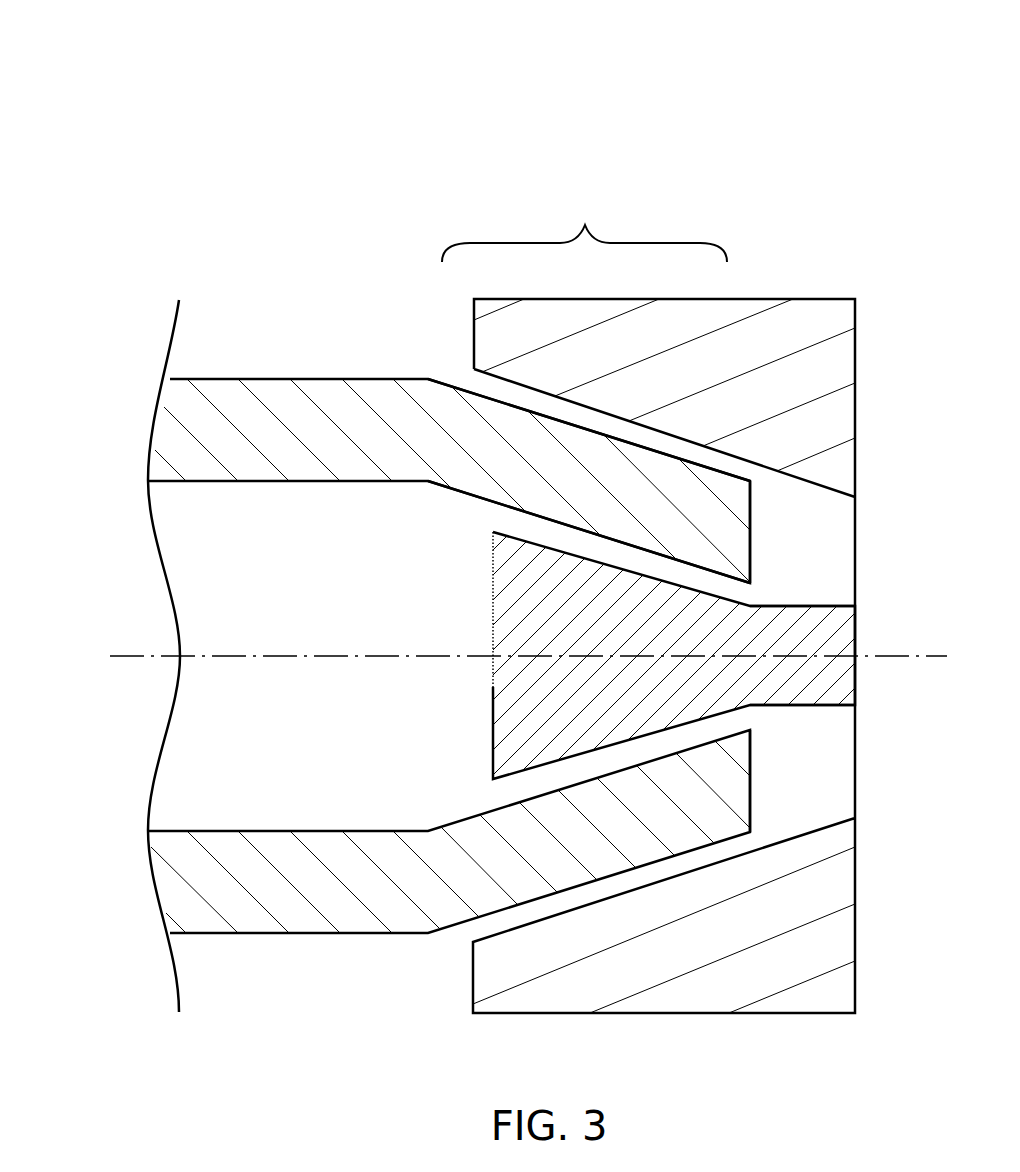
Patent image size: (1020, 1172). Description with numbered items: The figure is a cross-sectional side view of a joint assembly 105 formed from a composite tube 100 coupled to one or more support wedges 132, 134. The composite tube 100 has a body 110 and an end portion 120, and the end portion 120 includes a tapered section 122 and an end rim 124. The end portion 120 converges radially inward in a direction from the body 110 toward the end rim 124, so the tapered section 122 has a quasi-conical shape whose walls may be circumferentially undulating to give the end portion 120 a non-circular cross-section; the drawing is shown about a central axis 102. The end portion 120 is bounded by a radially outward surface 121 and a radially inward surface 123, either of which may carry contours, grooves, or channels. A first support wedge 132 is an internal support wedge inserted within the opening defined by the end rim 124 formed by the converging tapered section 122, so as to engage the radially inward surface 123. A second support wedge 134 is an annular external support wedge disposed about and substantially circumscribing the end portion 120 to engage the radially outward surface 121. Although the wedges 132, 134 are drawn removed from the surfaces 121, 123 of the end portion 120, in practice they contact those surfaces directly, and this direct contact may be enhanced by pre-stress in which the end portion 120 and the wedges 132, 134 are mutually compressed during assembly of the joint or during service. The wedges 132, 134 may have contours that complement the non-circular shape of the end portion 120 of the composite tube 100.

The composite tube 100 is at (116, 339).
The central axis 102 is at (128, 657).
The joint assembly 105 is at (238, 114).
The body 110 is at (274, 394).
The end portion 120 is at (657, 514).
The radially outward surface 121 is at (513, 404).
The tapered section 122 is at (521, 468).
The radially inward surface 123 is at (613, 541).
The end rim 124 is at (751, 534).
The first support wedge 132 is at (830, 633).
The second support wedge 134 is at (830, 423).